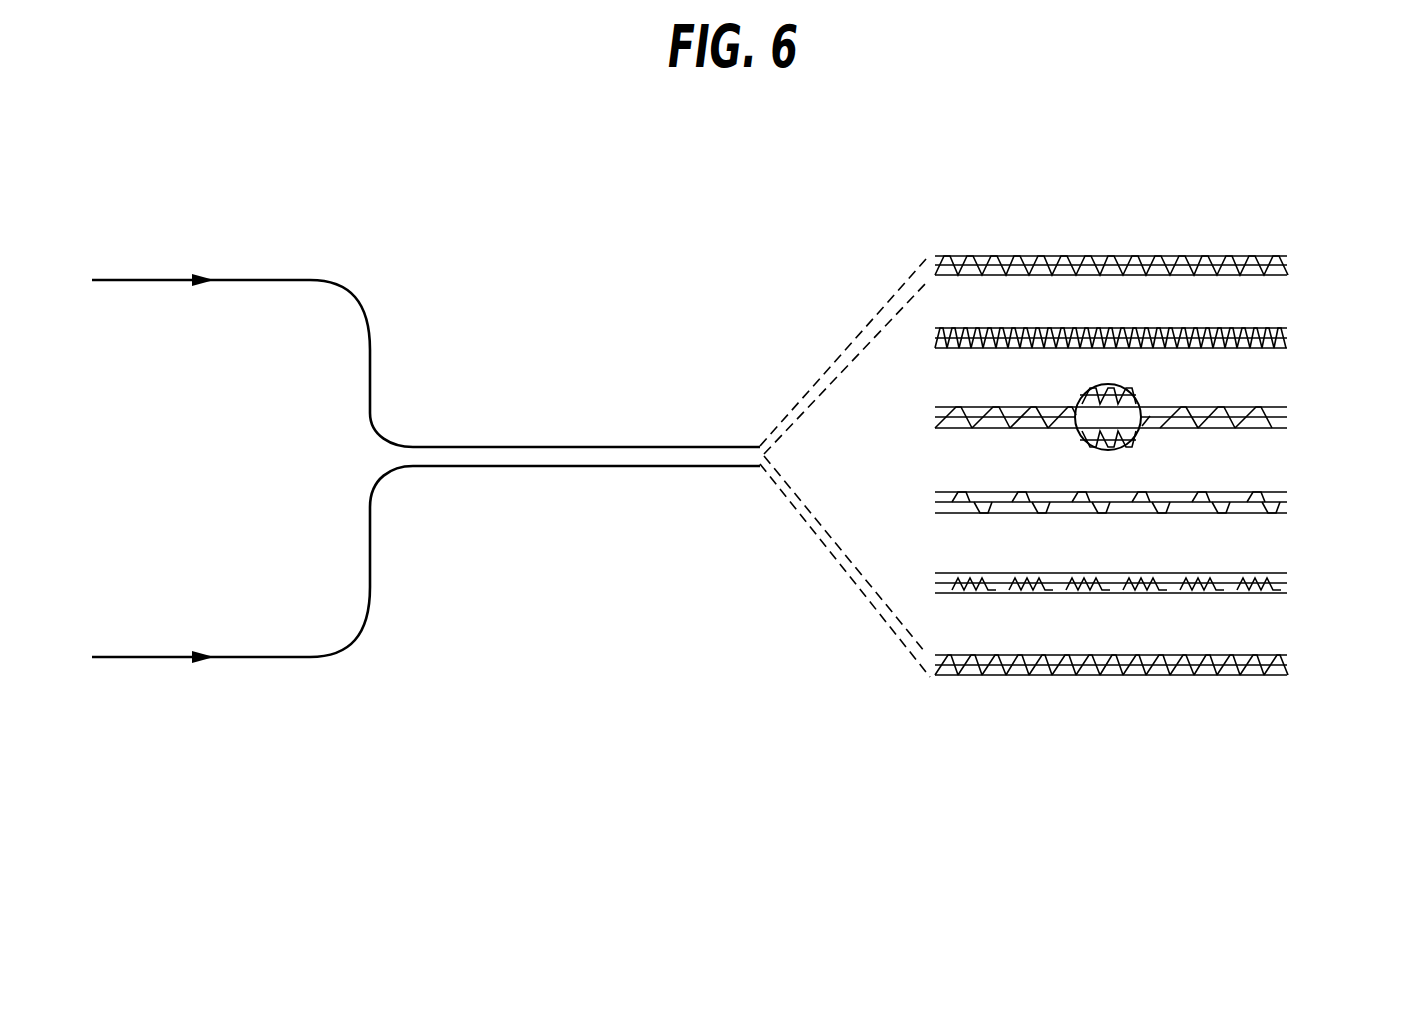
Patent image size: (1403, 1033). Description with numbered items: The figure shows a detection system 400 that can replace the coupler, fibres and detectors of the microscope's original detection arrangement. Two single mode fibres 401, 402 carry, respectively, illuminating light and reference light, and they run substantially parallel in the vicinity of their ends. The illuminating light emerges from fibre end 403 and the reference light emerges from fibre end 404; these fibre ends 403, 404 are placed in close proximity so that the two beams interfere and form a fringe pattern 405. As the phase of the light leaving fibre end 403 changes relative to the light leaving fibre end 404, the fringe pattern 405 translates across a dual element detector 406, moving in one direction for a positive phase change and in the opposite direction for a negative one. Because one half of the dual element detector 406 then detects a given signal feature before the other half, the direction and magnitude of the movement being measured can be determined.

The detection system 400 is at (551, 196).
The single mode fibre 401 is at (269, 278).
The single mode fibre 402 is at (267, 660).
The fibre end 403 is at (757, 440).
The fibre end 404 is at (741, 470).
The fringe pattern 405 is at (1292, 244).
The dual element detector 406 is at (1131, 441).